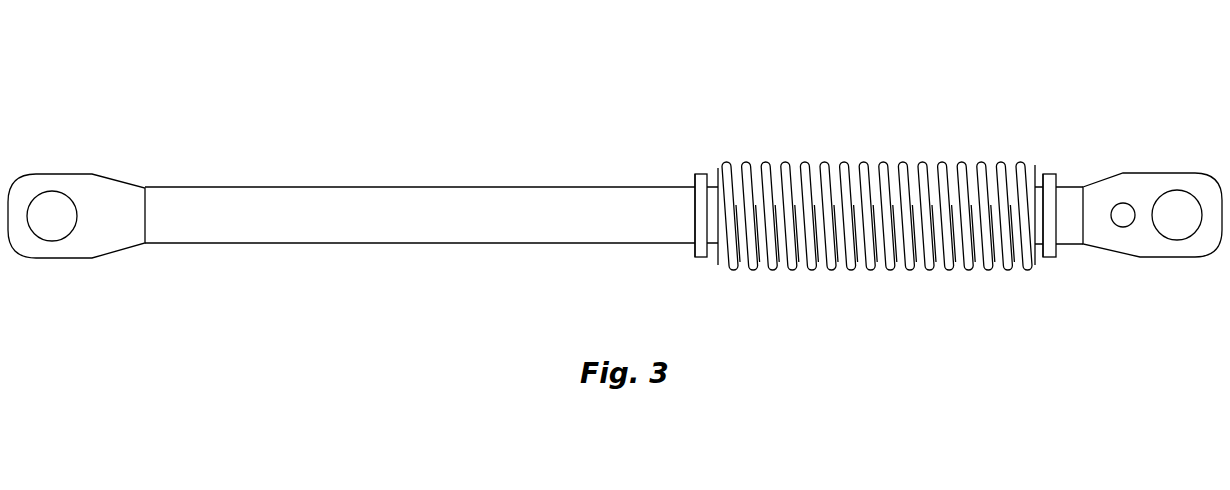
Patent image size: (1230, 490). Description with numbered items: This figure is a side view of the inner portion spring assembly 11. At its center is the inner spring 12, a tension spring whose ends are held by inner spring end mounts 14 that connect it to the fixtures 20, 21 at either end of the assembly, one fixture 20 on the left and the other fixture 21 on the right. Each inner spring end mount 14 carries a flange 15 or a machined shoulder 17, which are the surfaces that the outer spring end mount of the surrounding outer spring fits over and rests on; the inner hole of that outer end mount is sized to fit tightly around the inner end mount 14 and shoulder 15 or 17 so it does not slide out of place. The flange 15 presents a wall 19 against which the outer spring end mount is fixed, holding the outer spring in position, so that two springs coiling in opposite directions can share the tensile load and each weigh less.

The rod assembly 11 is at (921, 372).
The inner spring 12 is at (901, 185).
The inner spring end mount 14 is at (723, 234).
The flange 15 is at (714, 176).
The machined shoulder 17 is at (1046, 225).
The wall 19 is at (695, 178).
The fixture 20 is at (102, 235).
The fixture 21 is at (1157, 247).